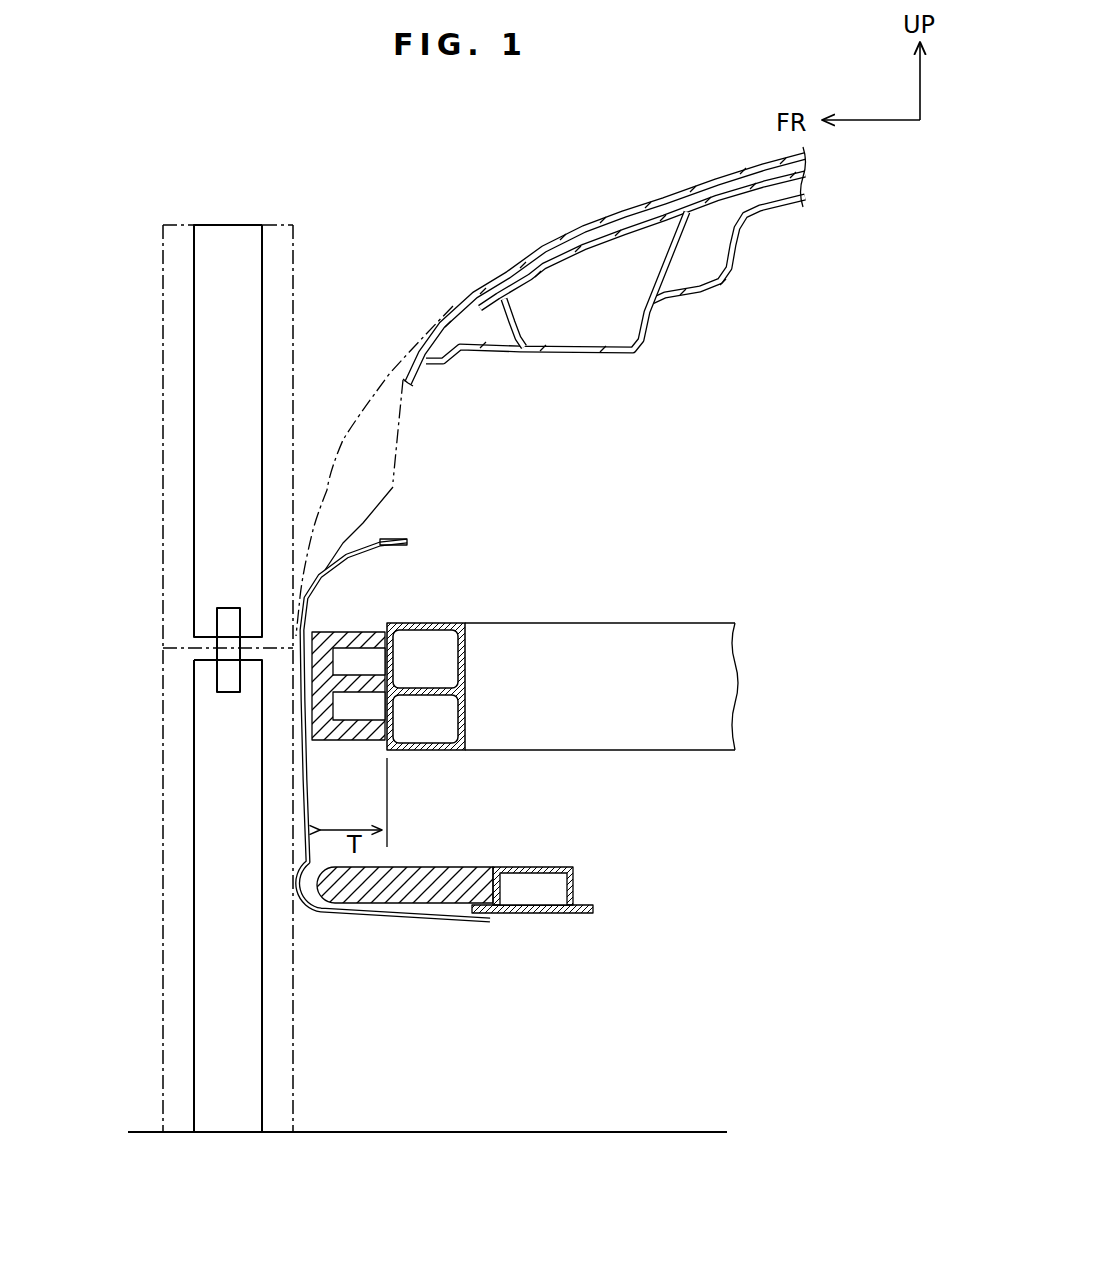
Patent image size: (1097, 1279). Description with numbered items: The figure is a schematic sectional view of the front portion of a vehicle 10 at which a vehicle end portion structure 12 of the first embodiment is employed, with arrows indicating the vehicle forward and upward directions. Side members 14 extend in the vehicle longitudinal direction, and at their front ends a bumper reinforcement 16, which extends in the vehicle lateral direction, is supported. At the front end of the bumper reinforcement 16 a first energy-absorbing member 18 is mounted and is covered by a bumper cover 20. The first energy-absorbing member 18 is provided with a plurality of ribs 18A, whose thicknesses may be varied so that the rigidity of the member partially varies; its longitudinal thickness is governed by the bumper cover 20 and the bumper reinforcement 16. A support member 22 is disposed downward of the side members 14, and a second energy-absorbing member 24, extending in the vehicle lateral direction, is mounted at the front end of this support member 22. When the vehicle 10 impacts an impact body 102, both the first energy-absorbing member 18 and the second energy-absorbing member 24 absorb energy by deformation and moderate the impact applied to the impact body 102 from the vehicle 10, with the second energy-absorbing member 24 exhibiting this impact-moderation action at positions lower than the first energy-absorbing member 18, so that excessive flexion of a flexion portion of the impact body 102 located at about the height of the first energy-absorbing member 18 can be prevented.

The vehicle 10 is at (650, 187).
The vehicle end portion structure 12 is at (340, 370).
The side member 14 is at (583, 623).
The bumper reinforcement 16 is at (433, 623).
The first energy-absorbing member 18 is at (333, 627).
The rib 18A is at (360, 640).
The bumper cover 20 is at (352, 548).
The support member 22 is at (533, 867).
The second energy-absorbing member 24 is at (447, 867).
The impact body 102 is at (160, 1015).